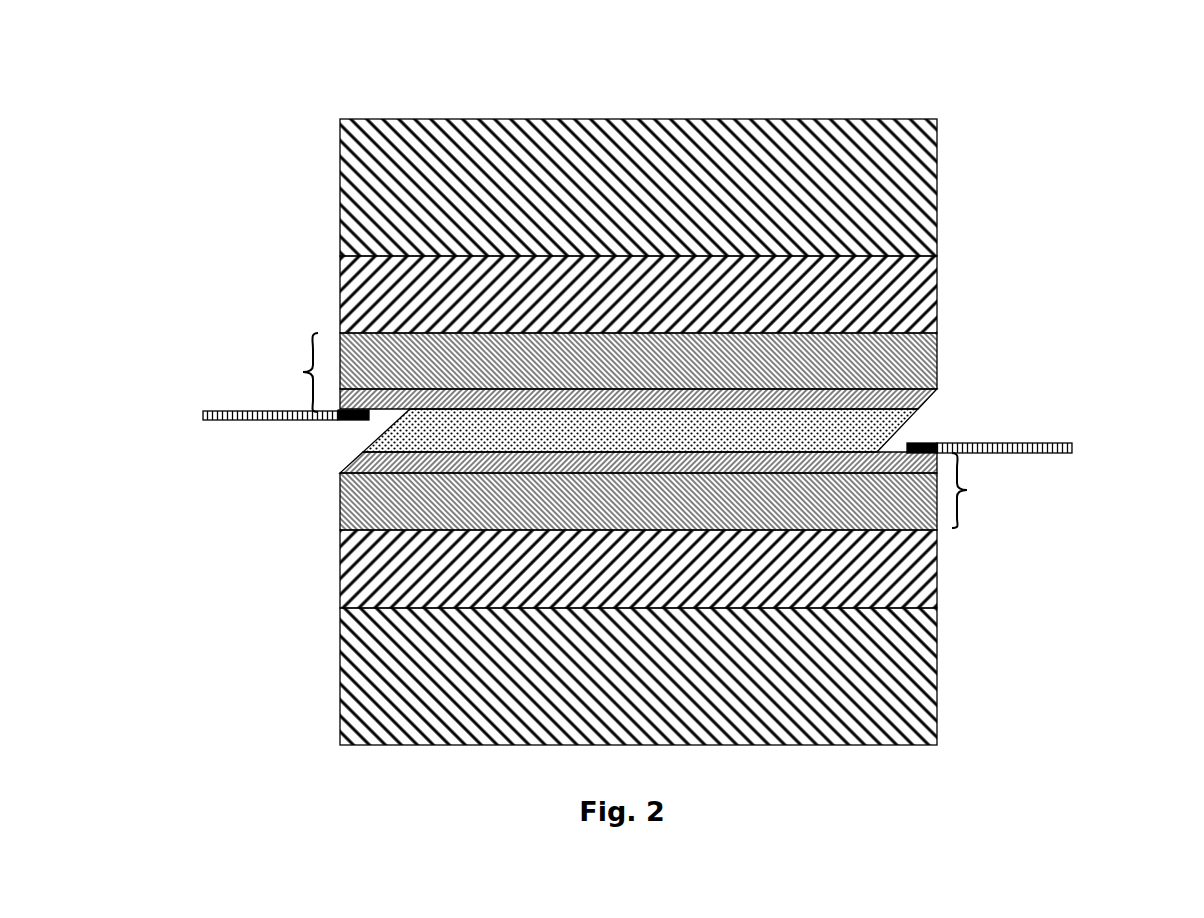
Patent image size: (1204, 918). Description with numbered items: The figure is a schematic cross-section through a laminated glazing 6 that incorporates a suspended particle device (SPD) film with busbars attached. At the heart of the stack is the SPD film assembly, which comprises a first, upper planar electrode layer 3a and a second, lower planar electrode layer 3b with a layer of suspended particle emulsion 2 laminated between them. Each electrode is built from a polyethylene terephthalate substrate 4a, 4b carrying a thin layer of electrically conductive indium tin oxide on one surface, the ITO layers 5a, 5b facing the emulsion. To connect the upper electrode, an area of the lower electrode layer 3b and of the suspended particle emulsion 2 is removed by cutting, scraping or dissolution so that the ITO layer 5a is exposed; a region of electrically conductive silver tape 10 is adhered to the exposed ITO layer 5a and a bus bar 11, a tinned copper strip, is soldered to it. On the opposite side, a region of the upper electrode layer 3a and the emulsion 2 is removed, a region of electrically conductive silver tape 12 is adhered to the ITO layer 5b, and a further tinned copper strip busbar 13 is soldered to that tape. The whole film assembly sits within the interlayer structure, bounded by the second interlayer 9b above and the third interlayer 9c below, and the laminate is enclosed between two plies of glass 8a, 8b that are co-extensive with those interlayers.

The layer of suspended particle emulsion 2 is at (883, 422).
The first planar electrode layer 3a is at (596, 372).
The second planar electrode layer 3b is at (675, 491).
The polyethylene terephthalate substrate 4a is at (917, 358).
The polyethylene terephthalate substrate 4b is at (360, 505).
The ITO layer 5a is at (915, 400).
The ITO layer 5b is at (357, 463).
The glazing 6 is at (1018, 149).
The ply of glass 8a is at (357, 164).
The ply of glass 8b is at (357, 665).
The second interlayer 9b is at (937, 288).
The third interlayer 9c is at (912, 567).
The electrically conductive silver tape 10 is at (367, 422).
The bus bar 11 is at (203, 413).
The electrically conductive silver tape 12 is at (922, 443).
The busbar 13 is at (1040, 448).